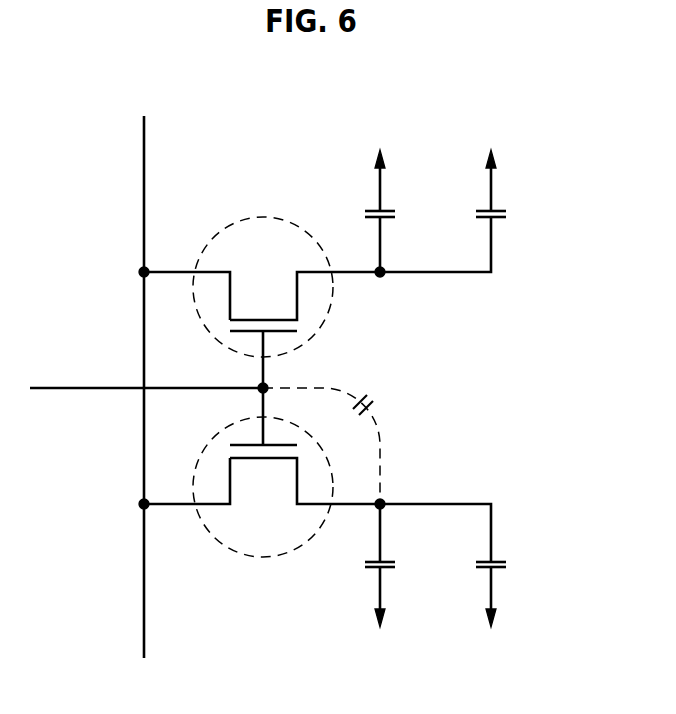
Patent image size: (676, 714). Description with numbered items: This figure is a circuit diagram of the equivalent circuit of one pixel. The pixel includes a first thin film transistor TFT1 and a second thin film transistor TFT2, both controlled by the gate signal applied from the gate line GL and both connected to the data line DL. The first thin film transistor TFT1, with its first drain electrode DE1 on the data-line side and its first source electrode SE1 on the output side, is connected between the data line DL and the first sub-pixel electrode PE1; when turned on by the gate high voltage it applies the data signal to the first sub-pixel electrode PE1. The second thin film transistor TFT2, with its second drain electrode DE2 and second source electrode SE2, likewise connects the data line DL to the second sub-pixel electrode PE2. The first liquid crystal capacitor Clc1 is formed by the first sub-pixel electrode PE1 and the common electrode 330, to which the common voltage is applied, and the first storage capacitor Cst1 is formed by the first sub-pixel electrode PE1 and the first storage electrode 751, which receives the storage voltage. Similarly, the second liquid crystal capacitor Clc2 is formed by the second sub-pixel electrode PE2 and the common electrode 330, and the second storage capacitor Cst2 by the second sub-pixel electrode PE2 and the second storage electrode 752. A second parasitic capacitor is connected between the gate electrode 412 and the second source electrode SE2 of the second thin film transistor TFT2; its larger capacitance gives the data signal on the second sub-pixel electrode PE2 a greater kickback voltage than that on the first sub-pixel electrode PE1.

The common electrode 330 is at (380, 182).
The first storage electrode 751 is at (491, 182).
The second storage electrode 752 is at (491, 588).
The gate electrode 412 is at (258, 347).
The data line DL is at (144, 178).
The gate line GL is at (66, 390).
The first thin film transistor TFT1 is at (286, 270).
The second thin film transistor TFT2 is at (262, 529).
The first drain electrode DE1 is at (218, 270).
The first source electrode SE1 is at (315, 270).
The second drain electrode DE2 is at (218, 506).
The second source electrode SE2 is at (315, 506).
The first sub-pixel electrode PE1 is at (470, 272).
The second sub-pixel electrode PE2 is at (440, 504).
The first liquid crystal capacitor Clc1 is at (410, 238).
The second liquid crystal capacitor Clc2 is at (410, 542).
The first storage capacitor Cst1 is at (520, 219).
The second storage capacitor Cst2 is at (520, 566).